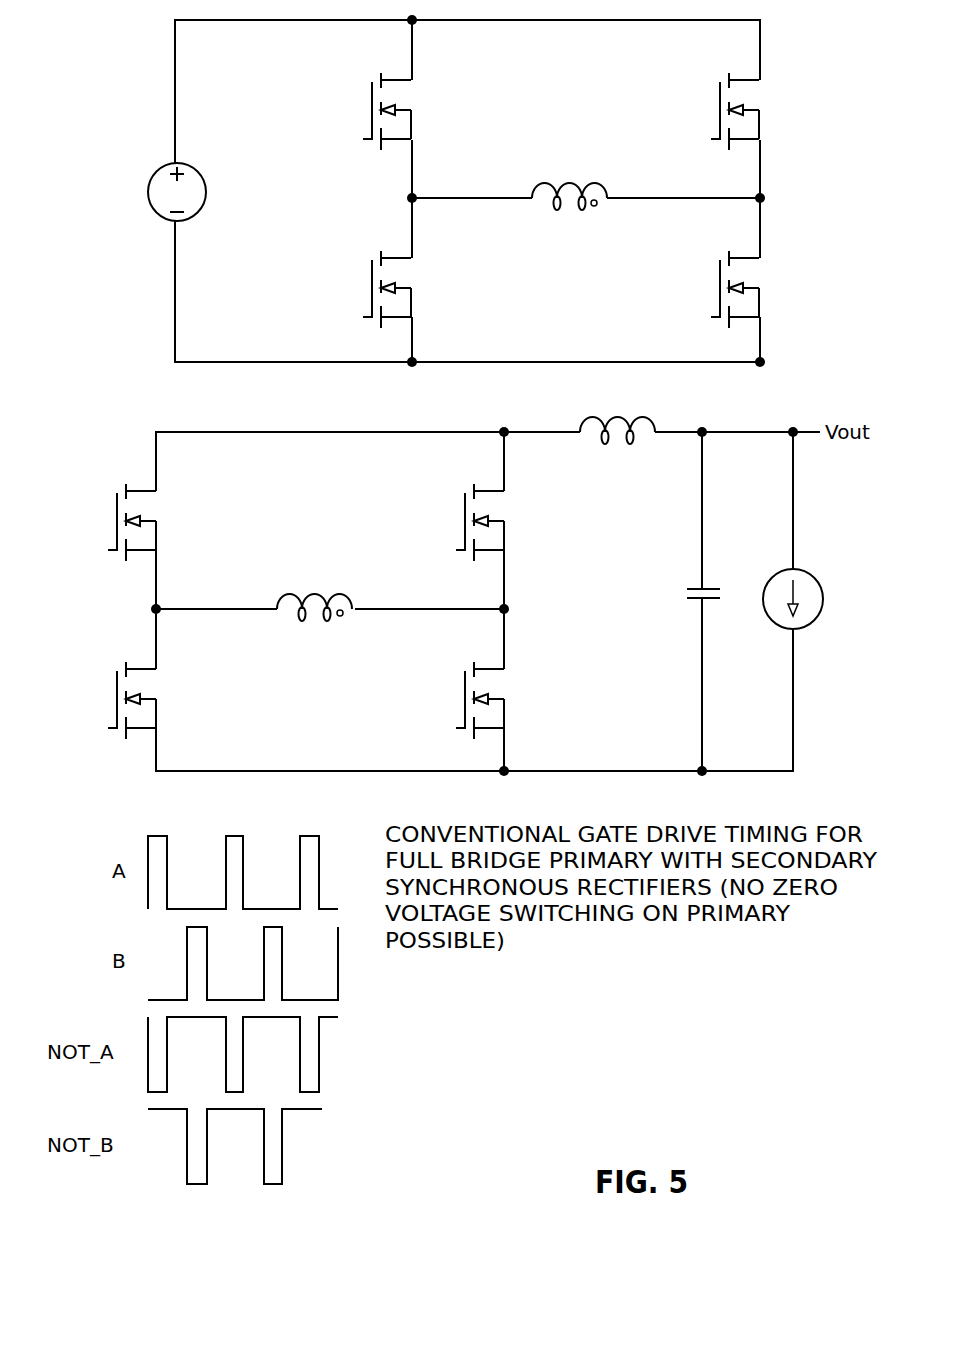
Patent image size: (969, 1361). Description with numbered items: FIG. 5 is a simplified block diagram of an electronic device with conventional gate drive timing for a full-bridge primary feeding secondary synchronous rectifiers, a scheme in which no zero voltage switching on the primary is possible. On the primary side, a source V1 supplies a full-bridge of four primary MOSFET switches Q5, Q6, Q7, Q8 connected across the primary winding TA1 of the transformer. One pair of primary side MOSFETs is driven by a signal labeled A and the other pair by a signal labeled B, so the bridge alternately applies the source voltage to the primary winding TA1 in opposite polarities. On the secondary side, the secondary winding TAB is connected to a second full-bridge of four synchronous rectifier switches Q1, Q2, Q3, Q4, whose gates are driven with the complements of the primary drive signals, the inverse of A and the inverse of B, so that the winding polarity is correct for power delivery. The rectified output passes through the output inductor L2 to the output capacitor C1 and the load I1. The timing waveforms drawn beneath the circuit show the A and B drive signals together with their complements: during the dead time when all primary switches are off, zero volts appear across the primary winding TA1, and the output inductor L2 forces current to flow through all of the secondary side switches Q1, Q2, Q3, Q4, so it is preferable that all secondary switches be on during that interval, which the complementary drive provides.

The input voltage source Vin V1 is at (184, 193).
The primary full-bridge NMOS transistor (gate B) Q5 is at (417, 85).
The primary full-bridge NMOS transistor (gate B) Q6 is at (766, 112).
The primary full-bridge NMOS transistor (gate A) Q7 is at (765, 290).
The primary full-bridge NMOS transistor (gate A) Q8 is at (417, 290).
The transformer primary winding Lsec TA1 is at (569, 196).
The secondary synchronous rectifier NMOS (gate NOT_B) Q1 is at (136, 523).
The secondary synchronous rectifier NMOS (gate NOT_A) Q2 is at (136, 700).
The secondary synchronous rectifier NMOS (gate NOT_B) Q3 is at (484, 700).
The secondary synchronous rectifier NMOS (gate NOT_A) Q4 is at (485, 497).
The transformer secondary winding Lsec TAB is at (314, 606).
The output inductor Lout L2 is at (617, 431).
The output capacitor Cout C1 is at (685, 597).
The load current source Iload I1 is at (808, 602).